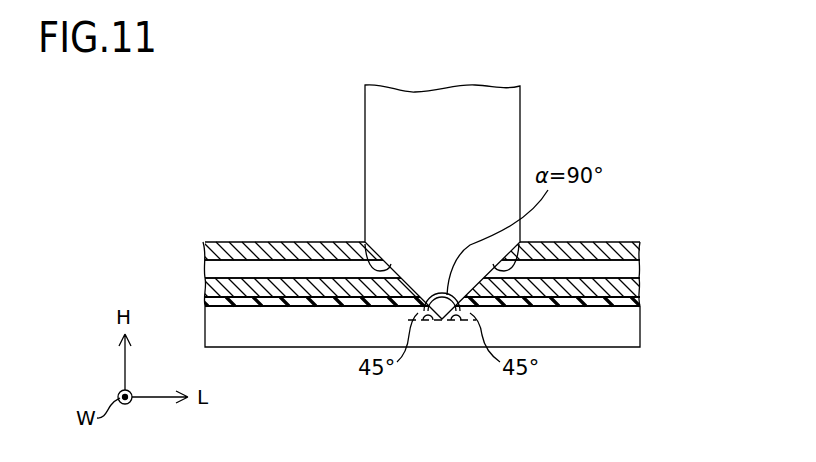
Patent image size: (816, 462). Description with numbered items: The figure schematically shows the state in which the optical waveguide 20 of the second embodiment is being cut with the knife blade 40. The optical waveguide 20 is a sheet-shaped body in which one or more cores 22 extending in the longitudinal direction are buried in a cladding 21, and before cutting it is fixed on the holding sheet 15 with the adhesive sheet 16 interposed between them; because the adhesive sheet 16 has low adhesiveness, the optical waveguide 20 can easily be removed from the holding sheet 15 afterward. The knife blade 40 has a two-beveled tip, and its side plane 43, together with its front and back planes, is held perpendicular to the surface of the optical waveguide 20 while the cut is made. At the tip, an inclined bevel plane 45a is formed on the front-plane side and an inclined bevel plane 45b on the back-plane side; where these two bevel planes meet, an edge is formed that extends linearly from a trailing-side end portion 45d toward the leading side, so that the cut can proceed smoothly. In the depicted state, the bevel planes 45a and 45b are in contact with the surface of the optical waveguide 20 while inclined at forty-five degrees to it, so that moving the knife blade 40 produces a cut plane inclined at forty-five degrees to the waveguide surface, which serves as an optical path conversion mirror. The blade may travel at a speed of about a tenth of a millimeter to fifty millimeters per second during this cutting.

The holding sheet 15 is at (640, 330).
The adhesive sheet 16 is at (640, 303).
The optical waveguide 20 is at (472, 269).
The cladding 21 is at (640, 245).
The core 22 is at (640, 265).
The knife blade 40 is at (443, 202).
The side plane 43 is at (391, 165).
The bevel plane 45a is at (364, 247).
The bevel plane 45b is at (523, 243).
The trailing-side end portion 45d is at (444, 323).